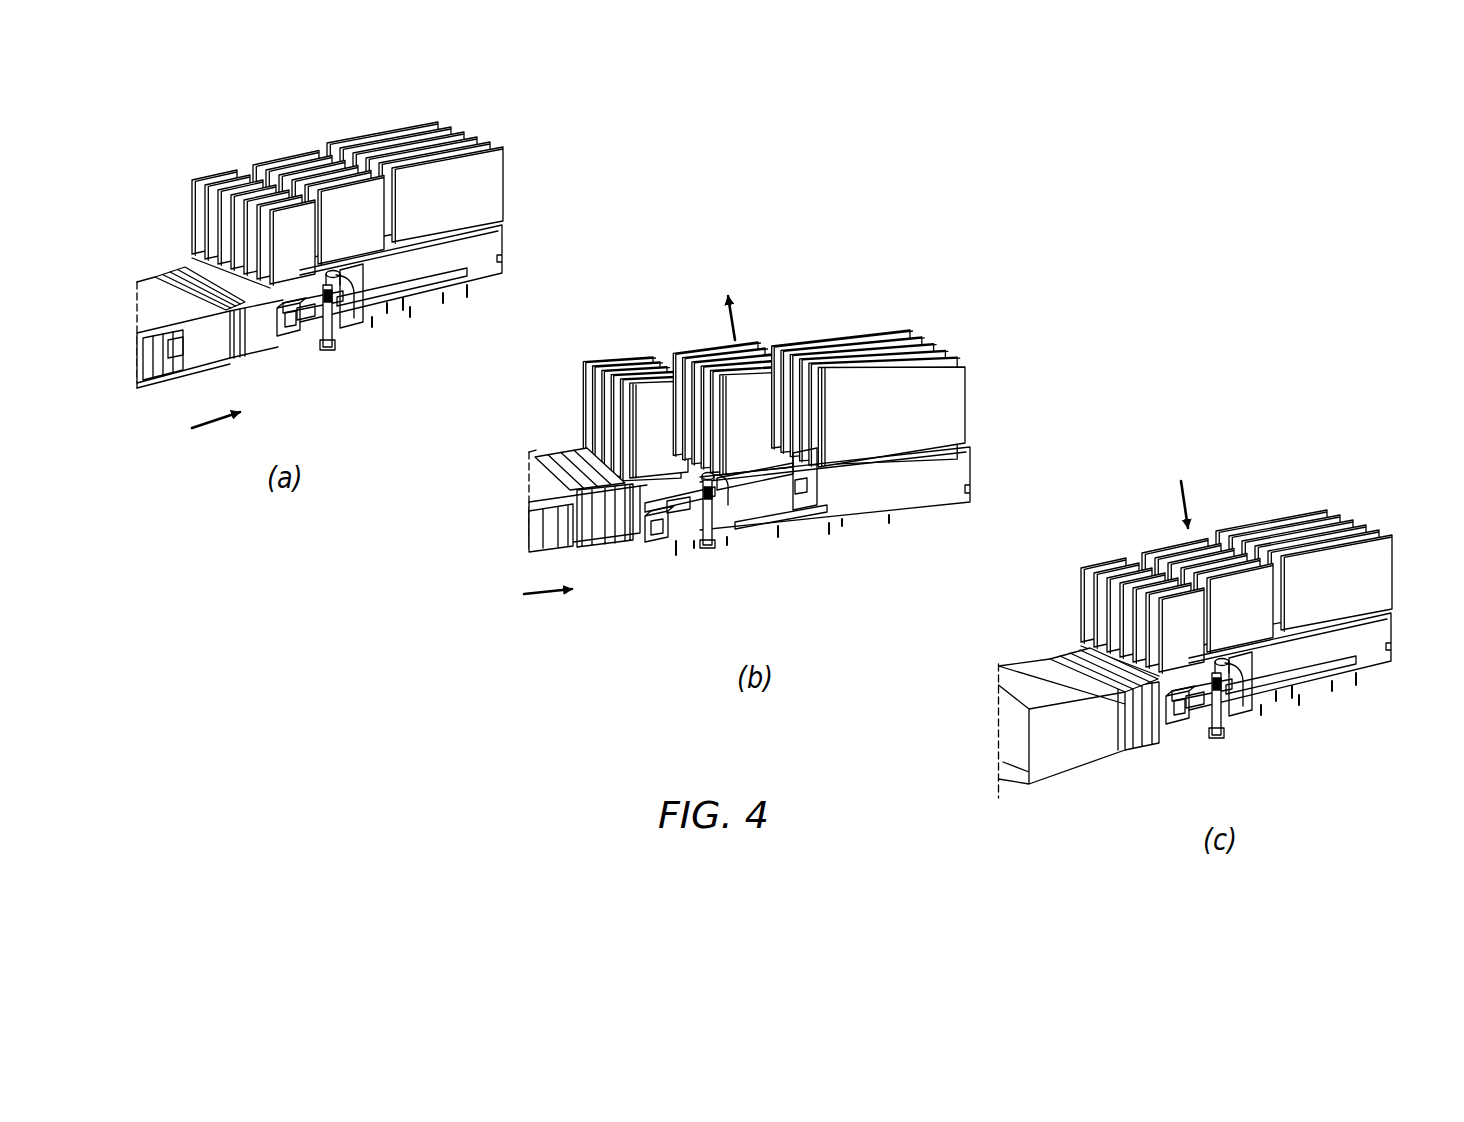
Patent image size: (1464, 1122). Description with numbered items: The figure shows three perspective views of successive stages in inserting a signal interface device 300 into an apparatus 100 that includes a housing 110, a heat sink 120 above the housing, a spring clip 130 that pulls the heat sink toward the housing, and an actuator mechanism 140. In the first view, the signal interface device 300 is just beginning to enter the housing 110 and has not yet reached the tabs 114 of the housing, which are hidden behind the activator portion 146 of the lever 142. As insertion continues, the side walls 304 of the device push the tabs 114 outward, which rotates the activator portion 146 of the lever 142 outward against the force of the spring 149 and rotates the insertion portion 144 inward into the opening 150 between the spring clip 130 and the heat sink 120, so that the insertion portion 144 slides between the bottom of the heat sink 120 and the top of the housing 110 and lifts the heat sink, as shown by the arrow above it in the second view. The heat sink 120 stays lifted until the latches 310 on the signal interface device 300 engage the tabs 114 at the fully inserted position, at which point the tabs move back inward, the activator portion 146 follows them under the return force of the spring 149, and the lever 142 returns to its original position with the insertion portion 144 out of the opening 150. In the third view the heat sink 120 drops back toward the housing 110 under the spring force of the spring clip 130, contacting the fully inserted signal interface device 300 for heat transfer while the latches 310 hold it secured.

The apparatus 100 is at (813, 452).
The housing 110 is at (506, 246).
The tabs 114 is at (296, 291).
The heat sink 120 is at (506, 174).
The spring clip 130 is at (398, 298).
The actuator mechanism 140 is at (790, 536).
The lever 142 is at (346, 317).
The insertion portion 144 is at (358, 271).
The activator portion 146 is at (290, 333).
The spring 149 is at (721, 546).
The opening 150 is at (784, 466).
The signal interface device 300 is at (621, 532).
The side walls 304 is at (213, 341).
The latches 310 is at (140, 396).